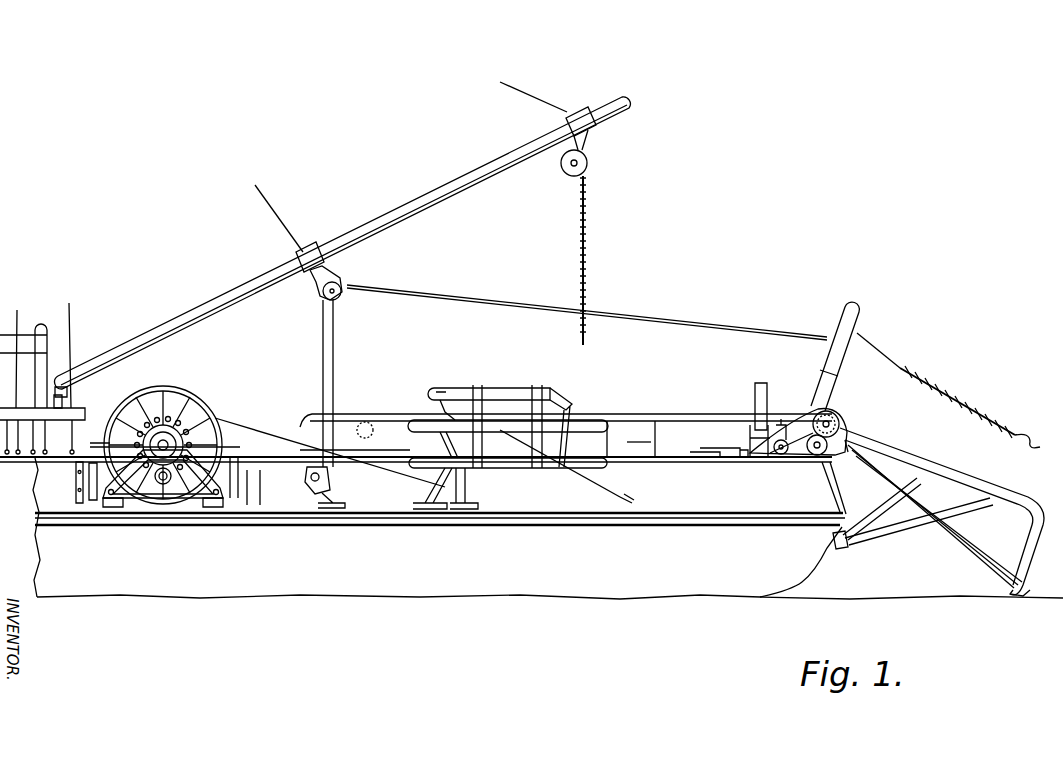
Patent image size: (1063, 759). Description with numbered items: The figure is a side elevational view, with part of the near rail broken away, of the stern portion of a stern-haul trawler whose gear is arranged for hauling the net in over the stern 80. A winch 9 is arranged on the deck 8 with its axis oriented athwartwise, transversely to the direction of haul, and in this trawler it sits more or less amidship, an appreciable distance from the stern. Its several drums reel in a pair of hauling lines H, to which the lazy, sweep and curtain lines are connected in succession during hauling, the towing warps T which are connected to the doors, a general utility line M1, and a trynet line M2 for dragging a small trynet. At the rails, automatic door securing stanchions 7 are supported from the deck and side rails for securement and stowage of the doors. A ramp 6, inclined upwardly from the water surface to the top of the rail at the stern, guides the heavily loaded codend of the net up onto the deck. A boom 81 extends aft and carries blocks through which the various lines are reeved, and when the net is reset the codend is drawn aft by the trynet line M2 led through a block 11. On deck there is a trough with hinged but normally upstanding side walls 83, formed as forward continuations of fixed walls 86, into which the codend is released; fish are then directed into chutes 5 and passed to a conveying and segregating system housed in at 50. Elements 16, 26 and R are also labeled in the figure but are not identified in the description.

The chutes 5 is at (712, 458).
The ramp 6 is at (960, 569).
The automatic door securing stanchions 7 is at (577, 393).
The deck 8 is at (272, 506).
The winch 9 is at (135, 382).
The block 11 is at (824, 348).
The guy chain 16 is at (832, 387).
The post 26 is at (753, 385).
The housing of conveying and segregating system 50 is at (237, 504).
The stern 80 is at (840, 488).
The boom 81 is at (247, 288).
The hinged upstanding side walls 83 is at (638, 432).
The fixed walls 86 is at (780, 414).
The hauling lines H is at (276, 420).
The line M1 is at (469, 204).
The trynet line M2 is at (761, 329).
The roller R is at (378, 426).
The towing warps T is at (378, 470).